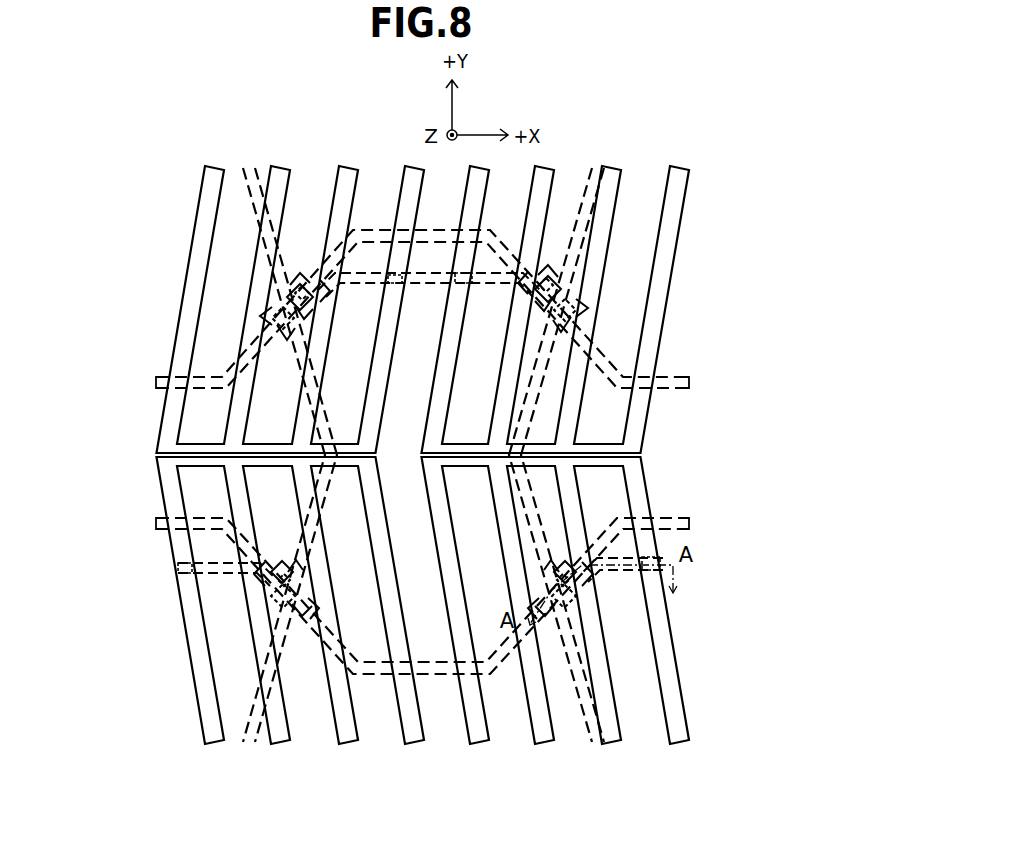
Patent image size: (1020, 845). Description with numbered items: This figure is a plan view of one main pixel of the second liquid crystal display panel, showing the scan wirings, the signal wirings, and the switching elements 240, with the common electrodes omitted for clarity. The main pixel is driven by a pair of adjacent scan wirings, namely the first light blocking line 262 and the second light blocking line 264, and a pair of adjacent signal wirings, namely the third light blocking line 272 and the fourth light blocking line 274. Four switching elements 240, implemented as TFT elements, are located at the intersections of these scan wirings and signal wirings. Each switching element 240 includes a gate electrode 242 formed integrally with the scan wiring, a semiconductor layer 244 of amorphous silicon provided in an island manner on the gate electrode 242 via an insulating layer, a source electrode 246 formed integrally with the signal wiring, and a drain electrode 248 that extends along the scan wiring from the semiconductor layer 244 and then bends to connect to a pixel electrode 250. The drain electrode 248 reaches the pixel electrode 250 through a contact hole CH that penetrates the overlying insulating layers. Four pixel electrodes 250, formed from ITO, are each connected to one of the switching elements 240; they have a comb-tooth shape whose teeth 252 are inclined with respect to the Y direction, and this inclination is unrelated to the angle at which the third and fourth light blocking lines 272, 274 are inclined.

The switching element 240 is at (423, 455).
The gate electrode 242 is at (565, 572).
The semiconductor layer 244 is at (563, 580).
The source electrode 246 is at (552, 601).
The drain electrode 248 is at (568, 573).
The pixel electrode 250 is at (155, 434).
The teeth 252 is at (478, 745).
The first light blocking line 262 is at (690, 382).
The second light blocking line 264 is at (690, 525).
The third light blocking line 272 is at (248, 745).
The fourth light blocking line 274 is at (598, 745).
The contact hole CH is at (452, 293).